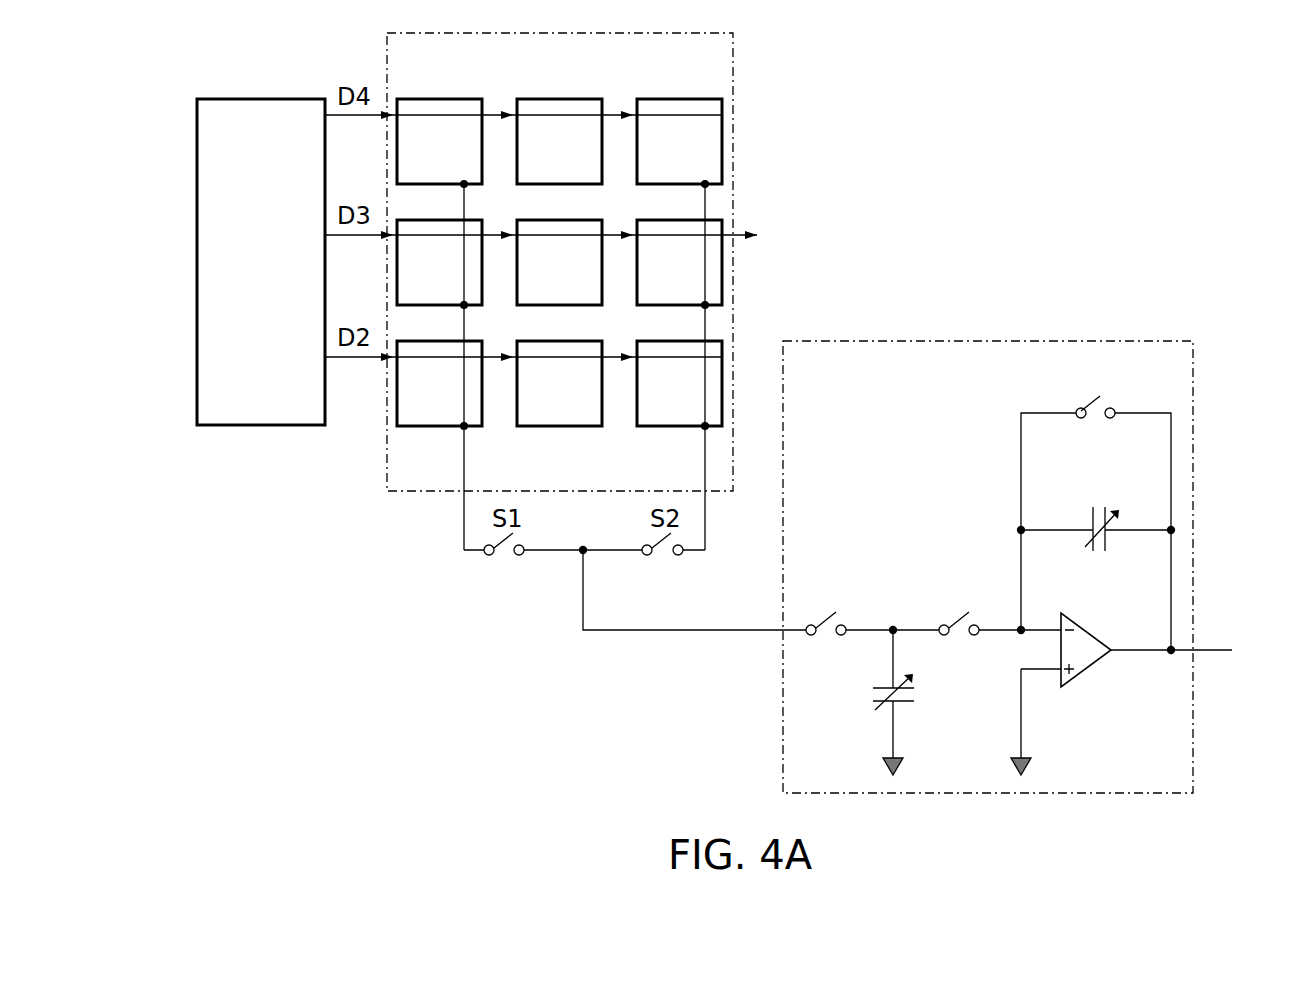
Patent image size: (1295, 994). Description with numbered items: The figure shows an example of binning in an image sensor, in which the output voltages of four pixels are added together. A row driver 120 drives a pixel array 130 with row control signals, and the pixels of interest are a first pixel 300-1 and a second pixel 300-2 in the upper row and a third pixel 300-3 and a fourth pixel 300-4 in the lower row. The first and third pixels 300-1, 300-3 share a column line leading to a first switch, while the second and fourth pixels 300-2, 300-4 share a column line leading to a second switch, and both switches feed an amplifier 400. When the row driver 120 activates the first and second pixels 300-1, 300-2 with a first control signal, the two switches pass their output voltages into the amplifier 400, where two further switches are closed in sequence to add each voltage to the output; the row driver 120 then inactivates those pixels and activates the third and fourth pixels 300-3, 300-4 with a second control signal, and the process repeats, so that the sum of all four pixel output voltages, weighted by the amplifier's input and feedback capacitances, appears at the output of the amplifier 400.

The row driver 120 is at (260, 99).
The pixel array 130 is at (560, 33).
The first pixel 300-1 is at (440, 99).
The second pixel 300-2 is at (680, 99).
The third pixel 300-3 is at (440, 426).
The fourth pixel 300-4 is at (680, 426).
The amplifier 400 is at (985, 341).